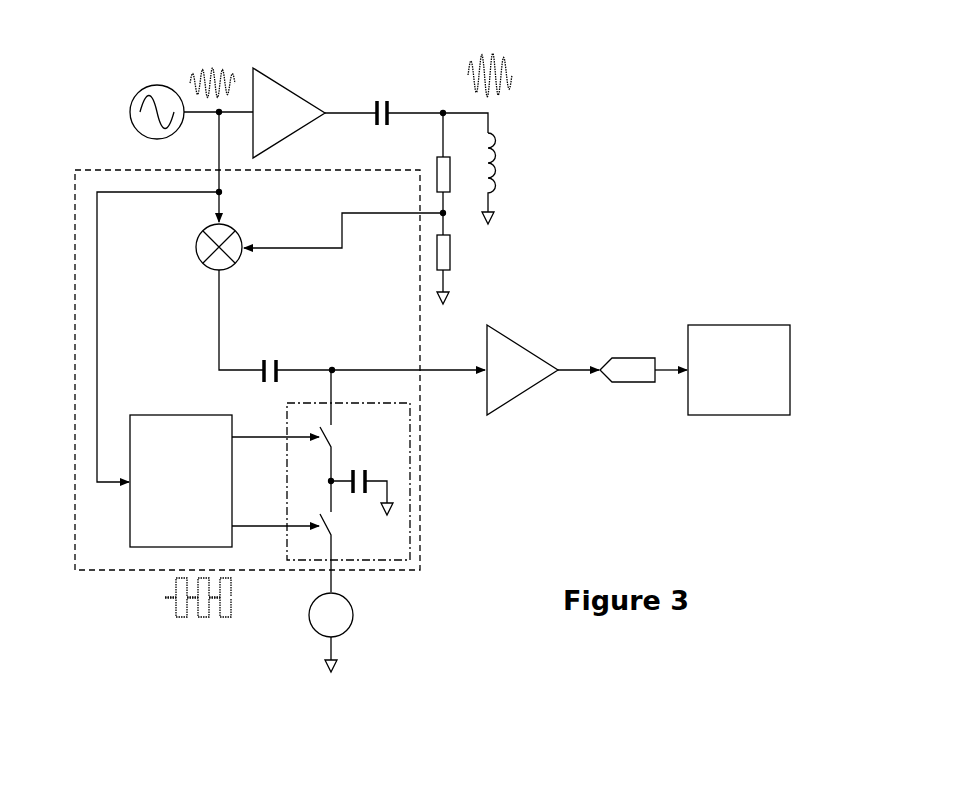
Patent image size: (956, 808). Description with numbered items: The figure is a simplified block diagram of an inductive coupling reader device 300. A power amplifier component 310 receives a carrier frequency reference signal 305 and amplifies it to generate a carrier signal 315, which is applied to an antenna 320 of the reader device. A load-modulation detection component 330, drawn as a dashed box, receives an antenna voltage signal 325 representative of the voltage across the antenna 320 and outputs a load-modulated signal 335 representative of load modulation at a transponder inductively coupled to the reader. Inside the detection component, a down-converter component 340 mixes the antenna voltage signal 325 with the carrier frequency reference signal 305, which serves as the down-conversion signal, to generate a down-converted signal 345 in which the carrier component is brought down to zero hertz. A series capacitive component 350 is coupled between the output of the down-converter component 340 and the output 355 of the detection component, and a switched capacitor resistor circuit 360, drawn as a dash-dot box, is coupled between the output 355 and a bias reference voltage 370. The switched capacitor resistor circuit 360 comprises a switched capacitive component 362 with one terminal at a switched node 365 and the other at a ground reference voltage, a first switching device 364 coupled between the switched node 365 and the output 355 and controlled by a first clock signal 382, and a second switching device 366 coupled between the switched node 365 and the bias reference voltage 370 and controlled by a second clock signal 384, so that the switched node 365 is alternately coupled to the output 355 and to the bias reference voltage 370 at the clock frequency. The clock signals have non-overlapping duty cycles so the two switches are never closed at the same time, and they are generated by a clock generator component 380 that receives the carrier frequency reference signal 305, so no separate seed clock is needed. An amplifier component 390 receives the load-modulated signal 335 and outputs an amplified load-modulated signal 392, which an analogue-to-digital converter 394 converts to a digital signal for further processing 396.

The inductive coupling reader device 300 is at (680, 204).
The carrier frequency reference signal 305 is at (221, 66).
The power amplifier component 310 is at (289, 88).
The carrier signal 315 is at (340, 112).
The antenna 320 is at (508, 170).
The antenna voltage signal 325 is at (410, 212).
The load-modulation detection component 330 is at (106, 168).
The load-modulated signal 335 is at (466, 369).
The down-converter component 340 is at (195, 249).
The down-converted signal 345 is at (218, 304).
The series capacitive component 350 is at (275, 357).
The output 355 is at (427, 374).
The switched capacitor resistor circuit 360 is at (352, 402).
The switched capacitive component 362 is at (365, 467).
The first switching device 364 is at (336, 436).
The switched node 365 is at (325, 481).
The second switching device 366 is at (336, 526).
The bias reference voltage 370 is at (325, 583).
The clock generator component 380 is at (163, 413).
The first clock signal 382 is at (264, 440).
The second clock signal 384 is at (264, 530).
The amplifier component 390 is at (520, 345).
The amplified load-modulated signal 392 is at (568, 369).
The analogue-to-digital converter 394 is at (636, 357).
The further processing 396 is at (722, 324).